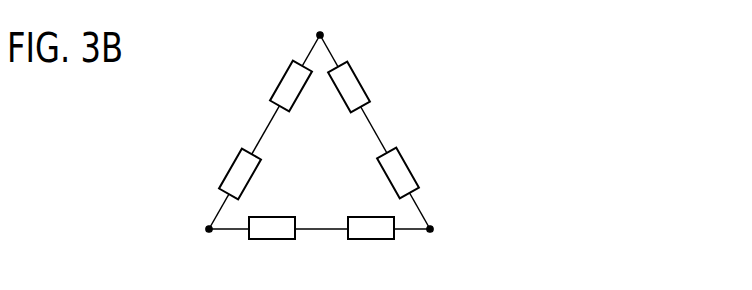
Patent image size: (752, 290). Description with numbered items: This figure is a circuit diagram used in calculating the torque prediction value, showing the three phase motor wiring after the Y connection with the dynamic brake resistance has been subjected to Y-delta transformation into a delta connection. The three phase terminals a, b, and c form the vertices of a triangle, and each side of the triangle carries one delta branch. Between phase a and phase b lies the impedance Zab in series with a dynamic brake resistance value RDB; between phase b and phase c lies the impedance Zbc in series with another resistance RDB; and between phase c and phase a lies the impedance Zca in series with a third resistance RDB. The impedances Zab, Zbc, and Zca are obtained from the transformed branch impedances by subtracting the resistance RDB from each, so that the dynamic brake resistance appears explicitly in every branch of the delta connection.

The impedance Zab is at (277, 84).
The impedance Zbc is at (365, 86).
The impedance Zca is at (272, 247).
The dynamic brake resistance value RDB is at (318, 211).
The phase a is at (197, 232).
The phase b is at (320, 21).
The phase c is at (442, 230).